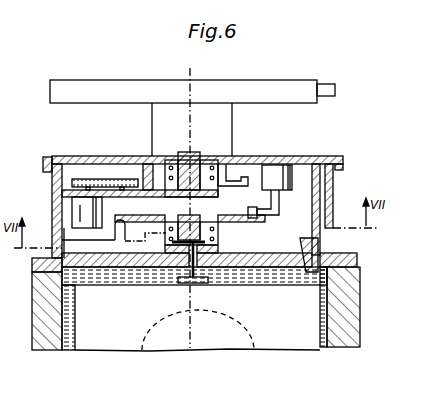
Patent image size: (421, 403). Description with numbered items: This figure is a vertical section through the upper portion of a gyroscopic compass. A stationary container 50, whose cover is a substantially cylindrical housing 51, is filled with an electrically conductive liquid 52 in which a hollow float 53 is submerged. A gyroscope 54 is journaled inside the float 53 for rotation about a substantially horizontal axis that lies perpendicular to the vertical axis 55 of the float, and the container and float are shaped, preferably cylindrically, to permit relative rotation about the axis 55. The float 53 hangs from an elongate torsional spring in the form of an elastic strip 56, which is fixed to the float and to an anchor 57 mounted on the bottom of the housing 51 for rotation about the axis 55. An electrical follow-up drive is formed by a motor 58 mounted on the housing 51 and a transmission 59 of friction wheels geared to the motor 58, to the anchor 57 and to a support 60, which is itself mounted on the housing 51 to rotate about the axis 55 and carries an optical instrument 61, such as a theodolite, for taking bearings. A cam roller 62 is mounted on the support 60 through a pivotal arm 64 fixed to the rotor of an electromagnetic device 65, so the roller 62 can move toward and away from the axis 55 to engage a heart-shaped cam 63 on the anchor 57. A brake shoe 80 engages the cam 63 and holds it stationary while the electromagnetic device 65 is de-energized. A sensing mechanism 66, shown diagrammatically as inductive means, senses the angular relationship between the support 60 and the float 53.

The stationary container 50 is at (352, 293).
The housing 51 is at (329, 186).
The electrically conductive liquid 52 is at (66, 352).
The hollow float 53 is at (290, 351).
The gyroscope 54 is at (252, 334).
The vertical axis 55 is at (190, 300).
The elastic strip 56 is at (204, 282).
The anchor 57 is at (206, 224).
The motor 58 is at (72, 205).
The transmission 59 is at (113, 176).
The support 60 is at (178, 178).
The optical instrument 61 is at (305, 80).
The cam roller 62 is at (254, 212).
The heart-shaped cam 63 is at (168, 222).
The pivotal arm 64 is at (276, 221).
The electromagnetic device 65 is at (286, 168).
The sensing mechanism 66 is at (316, 250).
The brake shoe 80 is at (118, 240).